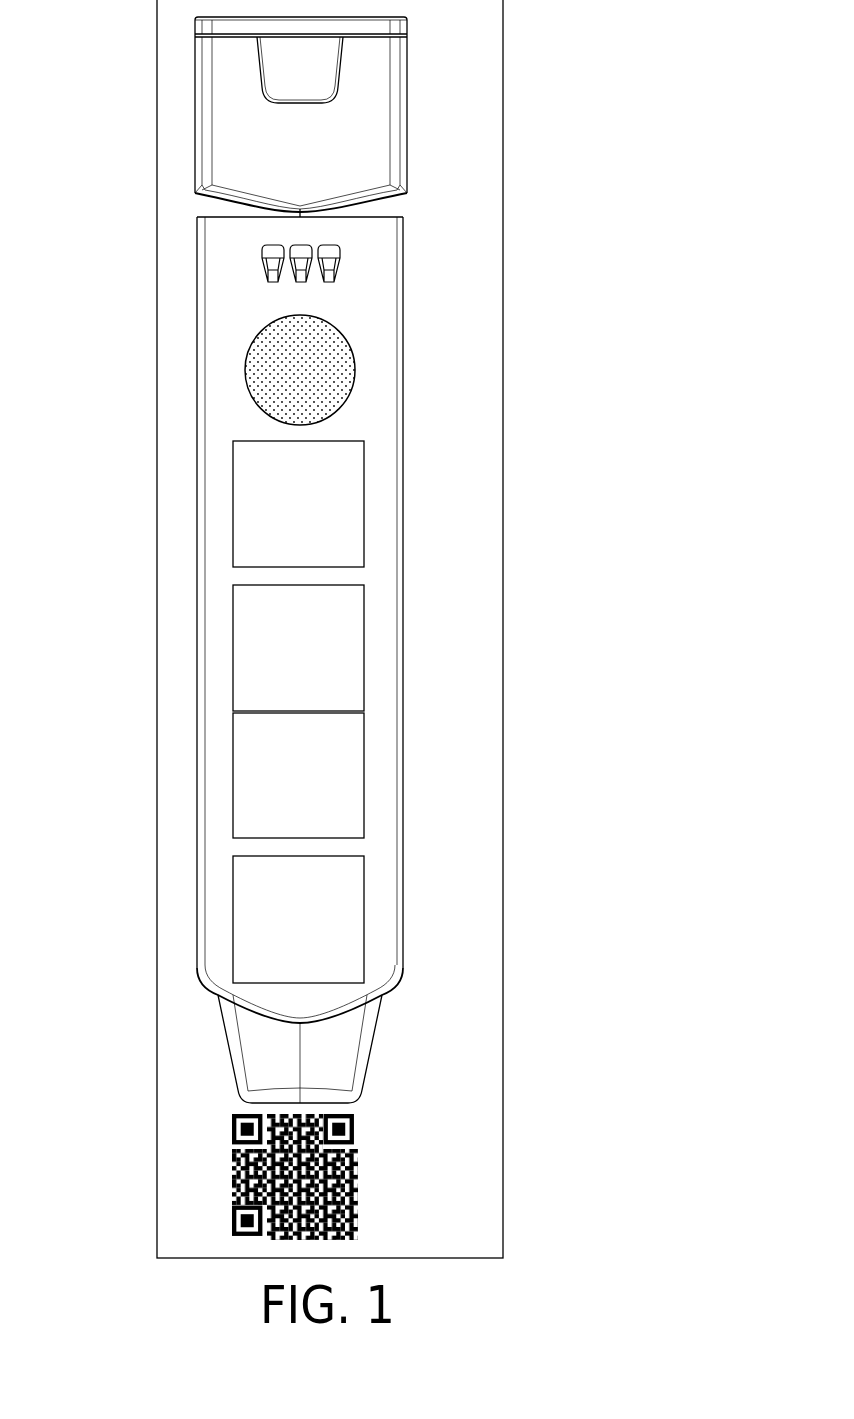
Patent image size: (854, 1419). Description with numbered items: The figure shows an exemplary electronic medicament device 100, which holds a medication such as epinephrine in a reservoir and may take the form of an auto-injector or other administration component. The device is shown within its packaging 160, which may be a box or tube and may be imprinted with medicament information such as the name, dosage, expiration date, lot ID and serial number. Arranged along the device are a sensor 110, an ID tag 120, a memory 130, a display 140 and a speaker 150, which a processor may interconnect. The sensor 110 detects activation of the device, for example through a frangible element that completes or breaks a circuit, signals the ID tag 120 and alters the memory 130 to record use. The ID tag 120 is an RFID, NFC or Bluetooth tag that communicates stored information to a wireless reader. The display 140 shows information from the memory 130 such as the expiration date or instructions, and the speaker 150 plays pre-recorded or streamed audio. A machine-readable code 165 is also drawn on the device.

The electronic medicament device 100 is at (395, 118).
The sensor 110 is at (364, 910).
The ID tag 120 is at (364, 768).
The memory 130 is at (364, 640).
The display 140 is at (364, 507).
The speaker 150 is at (345, 337).
The packaging 160 is at (157, 276).
The QR code 165 is at (232, 1168).